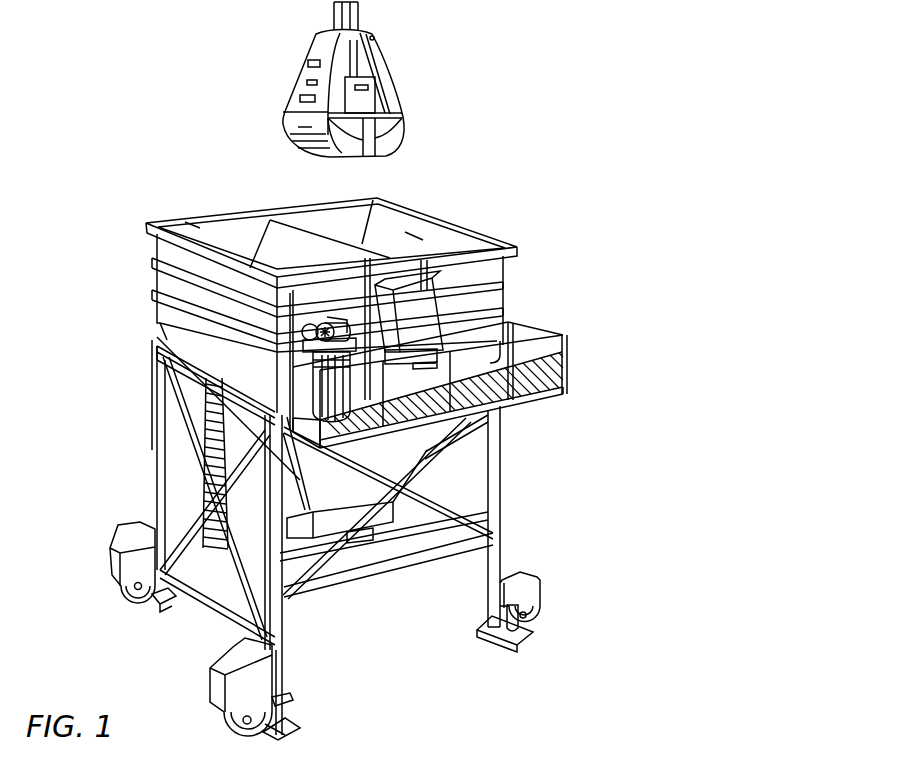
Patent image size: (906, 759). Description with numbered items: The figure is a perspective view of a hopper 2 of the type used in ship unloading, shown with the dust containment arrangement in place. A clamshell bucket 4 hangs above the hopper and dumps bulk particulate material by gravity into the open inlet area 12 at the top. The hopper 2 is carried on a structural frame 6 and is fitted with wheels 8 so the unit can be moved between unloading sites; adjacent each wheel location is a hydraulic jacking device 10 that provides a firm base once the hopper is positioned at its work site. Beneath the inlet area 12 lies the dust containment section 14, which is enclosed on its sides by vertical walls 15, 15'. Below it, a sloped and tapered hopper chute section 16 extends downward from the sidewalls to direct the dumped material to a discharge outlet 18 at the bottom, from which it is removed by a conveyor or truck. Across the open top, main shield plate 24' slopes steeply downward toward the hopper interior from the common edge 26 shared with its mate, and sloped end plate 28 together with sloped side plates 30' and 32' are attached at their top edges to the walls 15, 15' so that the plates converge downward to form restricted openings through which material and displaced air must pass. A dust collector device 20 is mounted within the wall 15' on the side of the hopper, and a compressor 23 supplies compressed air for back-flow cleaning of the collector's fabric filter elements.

The hopper 2 is at (146, 383).
The clamshell bucket 4 is at (396, 92).
The structural frame 6 is at (501, 482).
The wheels 8 is at (118, 570).
The foot plates / jacks 10 is at (162, 606).
The open inlet area 12 is at (367, 196).
The dust containment section 14 is at (148, 318).
The vertical wall 15 is at (310, 257).
The vertical wall 15' is at (368, 267).
The hopper chute section 16 is at (228, 420).
The discharge outlet 18 is at (306, 535).
The dust collector device 20 is at (440, 320).
The compressor 23 is at (303, 318).
The main shield plate 24' is at (234, 214).
The common edge 26 is at (278, 230).
The sloped end plate 28 is at (423, 232).
The sloped side plate 30' is at (344, 208).
The sloped side plate 32' is at (163, 202).